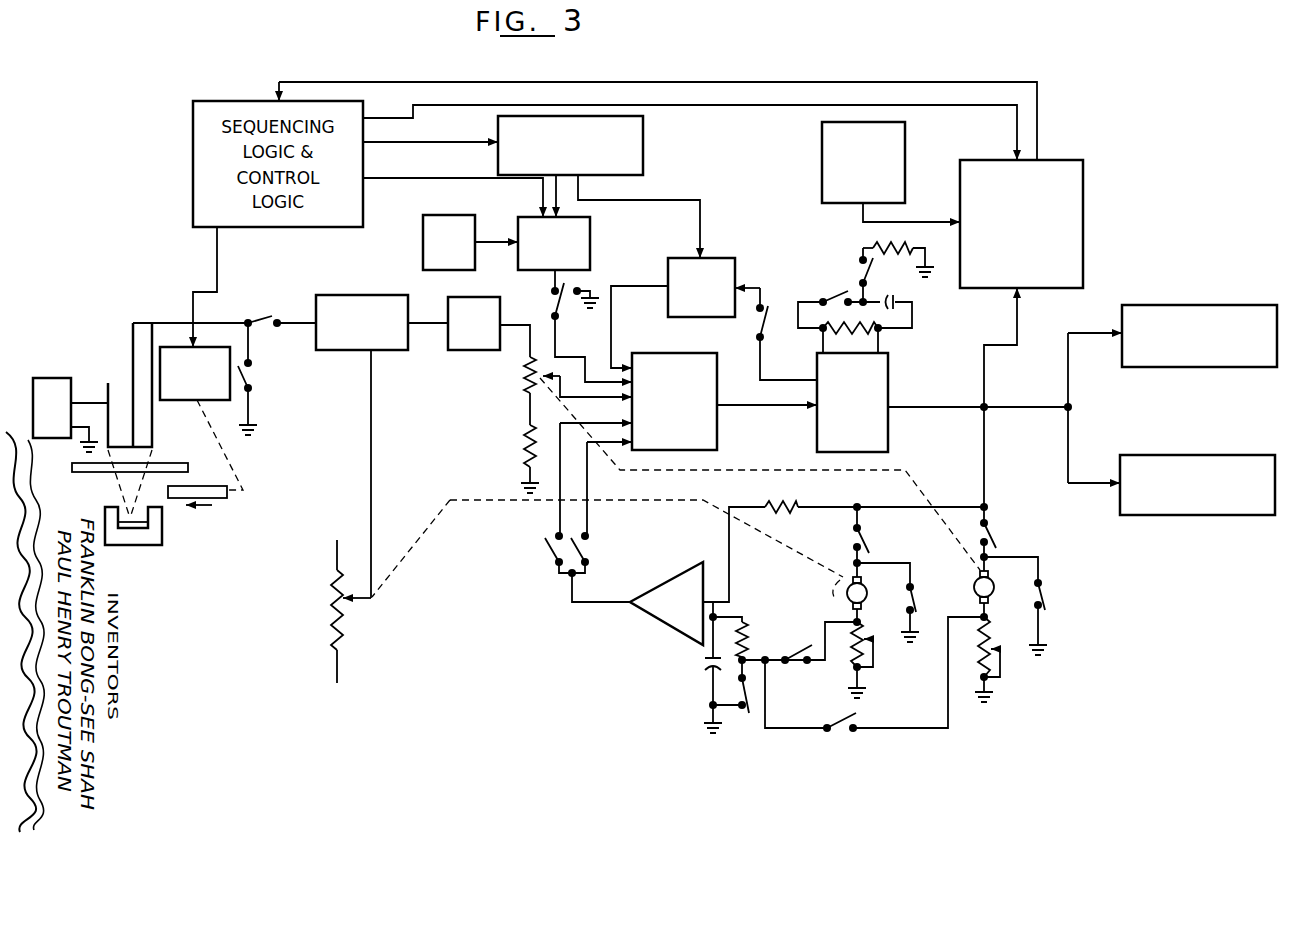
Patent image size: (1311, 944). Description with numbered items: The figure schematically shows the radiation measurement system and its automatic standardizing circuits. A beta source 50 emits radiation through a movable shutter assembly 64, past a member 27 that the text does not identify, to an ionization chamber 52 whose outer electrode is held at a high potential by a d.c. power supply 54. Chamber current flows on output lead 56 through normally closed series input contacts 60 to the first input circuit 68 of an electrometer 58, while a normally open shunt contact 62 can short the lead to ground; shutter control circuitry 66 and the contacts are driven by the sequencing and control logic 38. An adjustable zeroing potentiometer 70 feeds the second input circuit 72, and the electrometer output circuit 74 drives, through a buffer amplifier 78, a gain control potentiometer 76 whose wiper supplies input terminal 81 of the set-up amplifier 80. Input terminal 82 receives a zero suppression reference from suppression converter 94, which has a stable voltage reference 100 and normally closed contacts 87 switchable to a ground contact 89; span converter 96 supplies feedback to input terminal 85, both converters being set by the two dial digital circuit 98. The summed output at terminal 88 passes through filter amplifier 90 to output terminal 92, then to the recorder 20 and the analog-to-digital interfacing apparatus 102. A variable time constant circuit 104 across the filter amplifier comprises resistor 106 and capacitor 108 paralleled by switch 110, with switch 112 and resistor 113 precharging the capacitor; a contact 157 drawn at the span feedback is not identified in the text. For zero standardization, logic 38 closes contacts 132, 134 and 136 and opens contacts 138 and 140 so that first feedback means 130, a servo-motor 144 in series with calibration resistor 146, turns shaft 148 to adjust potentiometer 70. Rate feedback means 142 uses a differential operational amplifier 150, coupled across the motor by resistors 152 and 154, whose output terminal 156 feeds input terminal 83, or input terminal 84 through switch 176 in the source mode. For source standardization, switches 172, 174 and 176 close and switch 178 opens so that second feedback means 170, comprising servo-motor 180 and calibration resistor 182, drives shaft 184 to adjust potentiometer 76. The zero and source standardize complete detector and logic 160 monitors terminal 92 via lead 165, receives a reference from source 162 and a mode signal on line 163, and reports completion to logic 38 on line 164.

The recorder 20 is at (1211, 305).
The sample plate 27 is at (172, 462).
The sequencing and control logic 38 is at (367, 175).
The source of radiation 50 is at (149, 544).
The radiation detector 52 is at (152, 428).
The d.c. power supply 54 is at (48, 378).
The output lead 56 is at (133, 342).
The electrometer 58 is at (357, 294).
The series input contacts 60 is at (263, 319).
The additional contact 62 is at (253, 378).
The movable shutter assembly 64 is at (208, 485).
The shutter control circuitry 66 is at (160, 351).
The first input circuit 68 is at (302, 321).
The adjustable source of zeroing signal 70 is at (330, 618).
The second input circuit 72 is at (373, 437).
The output circuit of the electrometer 74 is at (466, 373).
The gain control means 76 is at (529, 378).
The buffer amplifier 78 is at (488, 297).
The set-up amplifier 80 is at (690, 358).
The input terminal 81 is at (607, 398).
The input terminal 82 is at (588, 360).
The input terminal 83 is at (558, 507).
The input terminal 84 is at (589, 514).
The input terminal 85 is at (613, 312).
The switch contacts 87 is at (549, 295).
The output terminal 88 is at (779, 408).
The ground contact position 89 is at (592, 290).
The filter amplifier 90 is at (890, 364).
The output terminal 92 is at (926, 407).
The suppression digital-to-analog converter 94 is at (540, 215).
The span digital-to-analog converter 96 is at (738, 262).
The two dial digital circuit 98 is at (646, 140).
The stable voltage reference input 100 is at (449, 215).
The analog-to-digital interfacing apparatus 102 is at (1178, 455).
The variable time constant circuit 104 is at (818, 283).
The resistor 106 is at (822, 338).
The capacitor 108 is at (907, 298).
The switch 110 is at (831, 307).
The switch 112 is at (871, 275).
The resistor 113 is at (860, 246).
The first feedback means 130 is at (794, 578).
The normally open contacts 132 is at (867, 547).
The normally open contacts 134 is at (800, 653).
The normally open contacts 136 is at (548, 551).
The normally closed contacts 138 is at (913, 597).
The normally closed contacts 140 is at (751, 699).
The rate feedback means 142 is at (559, 620).
The d.c. servo-motor 144 is at (867, 583).
The variable calibration resistor 146 is at (849, 645).
The shaft 148 is at (830, 597).
The differential operational amplifier 150 is at (678, 572).
The coupling resistor 152 is at (796, 508).
The coupling resistor 154 is at (748, 640).
The output terminal 156 is at (601, 602).
The switch 157 is at (772, 313).
The zero and source standardize complete detector and logic 160 is at (975, 159).
The standardize complete reference voltage source 162 is at (822, 152).
The line 163 is at (741, 106).
The line 164 is at (757, 84).
The lead 165 is at (1021, 320).
The second feedback means 170 is at (1077, 564).
The normally open switch 172 is at (998, 526).
The normally open switch 174 is at (838, 719).
The normally open switch 176 is at (589, 554).
The normally closed switch 178 is at (1047, 593).
The d.c. servo-motor 180 is at (993, 585).
The variable calibration resistor 182 is at (990, 640).
The shaft 184 is at (734, 470).